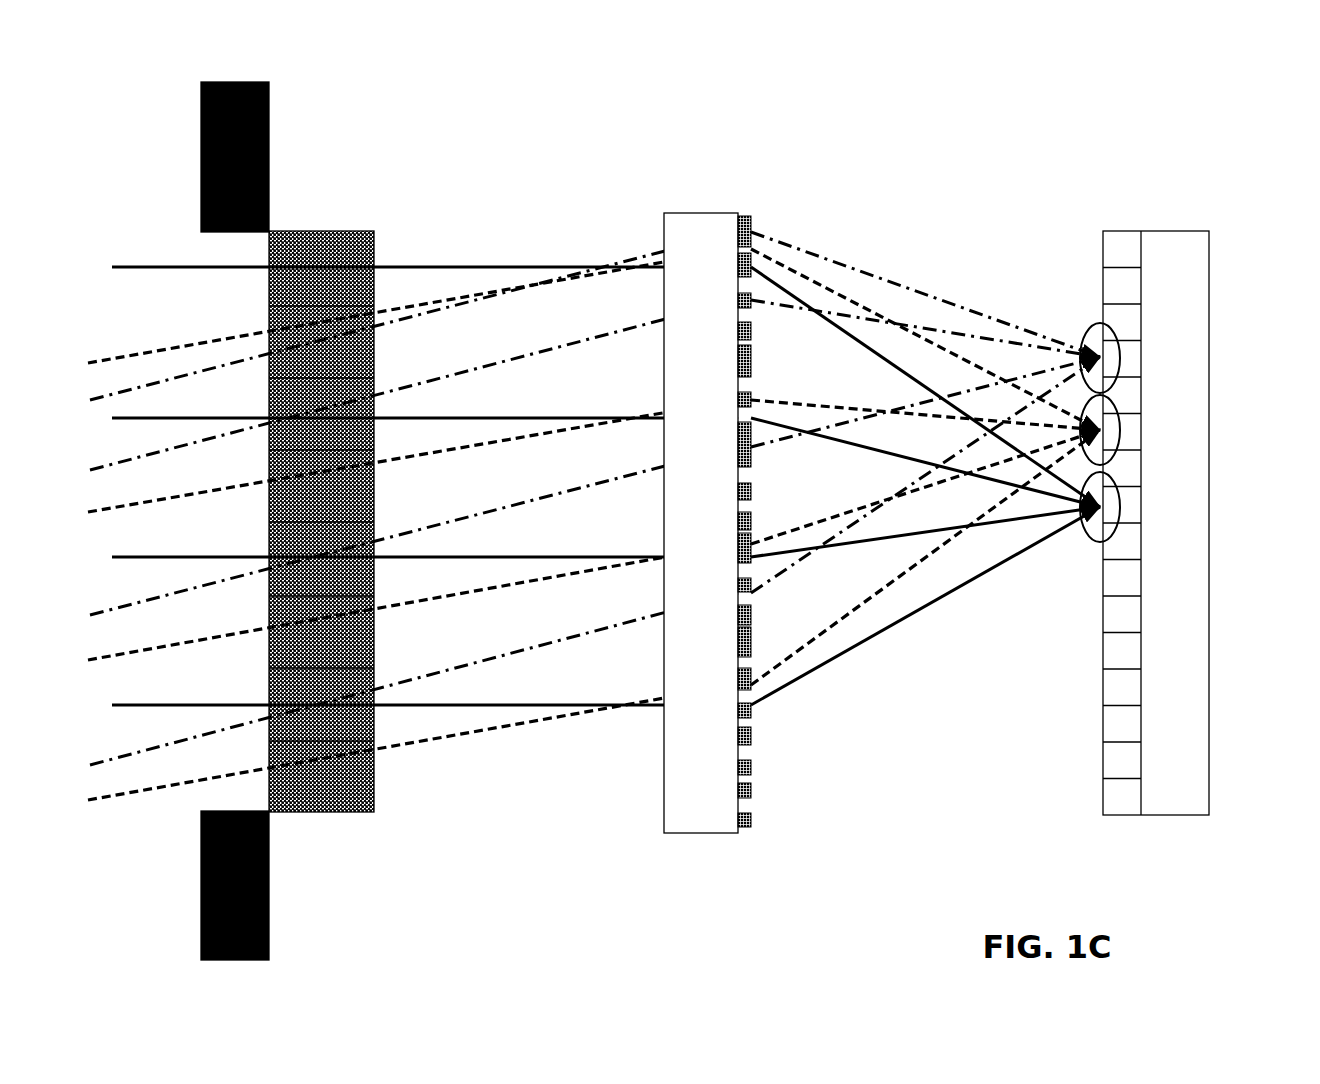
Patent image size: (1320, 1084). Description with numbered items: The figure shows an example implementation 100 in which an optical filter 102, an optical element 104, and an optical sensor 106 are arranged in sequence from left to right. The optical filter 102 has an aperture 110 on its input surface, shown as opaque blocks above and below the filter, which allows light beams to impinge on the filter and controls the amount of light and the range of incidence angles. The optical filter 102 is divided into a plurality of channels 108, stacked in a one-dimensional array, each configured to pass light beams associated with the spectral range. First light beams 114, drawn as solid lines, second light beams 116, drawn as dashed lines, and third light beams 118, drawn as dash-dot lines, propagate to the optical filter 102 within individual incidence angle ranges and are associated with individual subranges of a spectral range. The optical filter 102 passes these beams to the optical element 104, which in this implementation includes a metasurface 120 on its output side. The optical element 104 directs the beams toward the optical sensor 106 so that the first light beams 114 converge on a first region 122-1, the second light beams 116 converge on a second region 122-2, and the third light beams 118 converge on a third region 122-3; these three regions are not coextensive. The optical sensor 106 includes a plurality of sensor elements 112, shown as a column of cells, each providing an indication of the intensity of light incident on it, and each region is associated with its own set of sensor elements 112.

The example implementation 100 is at (215, 66).
The aperture 110 is at (201, 105).
The optical filter 102 is at (321, 479).
The channels 108 is at (317, 727).
The first light beams 114 is at (480, 267).
The second light beams 116 is at (453, 737).
The third light beams 118 is at (543, 643).
The optical element 104 is at (705, 492).
The metasurface 120 is at (746, 840).
The optical sensor 106 is at (1158, 499).
The sensor elements 112 is at (1122, 284).
The first region 122-1 is at (1120, 505).
The second region 122-2 is at (1120, 432).
The third region 122-3 is at (1090, 333).